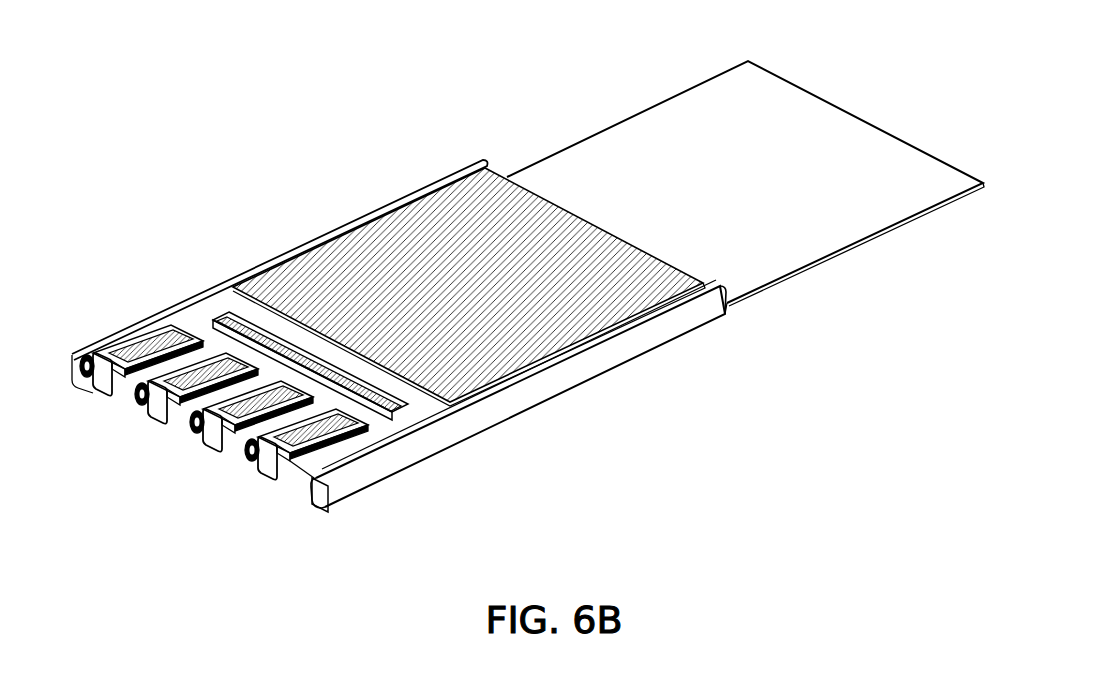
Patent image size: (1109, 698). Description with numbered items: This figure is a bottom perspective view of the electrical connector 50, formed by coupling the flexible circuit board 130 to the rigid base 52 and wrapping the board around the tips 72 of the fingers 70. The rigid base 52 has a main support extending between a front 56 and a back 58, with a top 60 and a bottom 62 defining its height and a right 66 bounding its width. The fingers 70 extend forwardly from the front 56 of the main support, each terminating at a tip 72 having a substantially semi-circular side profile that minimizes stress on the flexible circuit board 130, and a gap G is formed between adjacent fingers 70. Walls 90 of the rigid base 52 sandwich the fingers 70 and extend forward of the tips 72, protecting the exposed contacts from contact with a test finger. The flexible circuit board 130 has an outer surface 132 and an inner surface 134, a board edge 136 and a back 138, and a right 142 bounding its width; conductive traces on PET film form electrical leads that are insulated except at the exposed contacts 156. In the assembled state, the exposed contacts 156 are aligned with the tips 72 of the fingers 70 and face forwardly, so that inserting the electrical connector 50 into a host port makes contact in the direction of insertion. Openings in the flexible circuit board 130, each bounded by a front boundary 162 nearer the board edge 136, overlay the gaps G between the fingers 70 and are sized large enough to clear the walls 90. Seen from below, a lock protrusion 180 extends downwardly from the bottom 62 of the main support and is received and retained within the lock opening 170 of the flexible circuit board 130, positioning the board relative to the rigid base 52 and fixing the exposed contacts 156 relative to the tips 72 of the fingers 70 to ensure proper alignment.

The electrical connector 50 is at (258, 136).
The rigid base 52 is at (345, 203).
The front 56 is at (145, 342).
The back 58 is at (733, 270).
The top 60 is at (366, 452).
The bottom 62 is at (430, 238).
The right 66 is at (610, 383).
The fingers 70 is at (299, 507).
The tip 72 is at (247, 481).
The walls 90 is at (684, 332).
The flexible circuit board 130 is at (828, 84).
The outer surface 132 is at (430, 408).
The inner surface 134 is at (732, 185).
The board edge 136 is at (258, 292).
The back 138 is at (880, 124).
The right 142 is at (859, 262).
The exposed contacts 156 is at (128, 410).
The front boundary 162 is at (182, 332).
The lock opening 170 is at (205, 307).
The lock protrusion 180 is at (228, 308).
The gap G is at (166, 437).